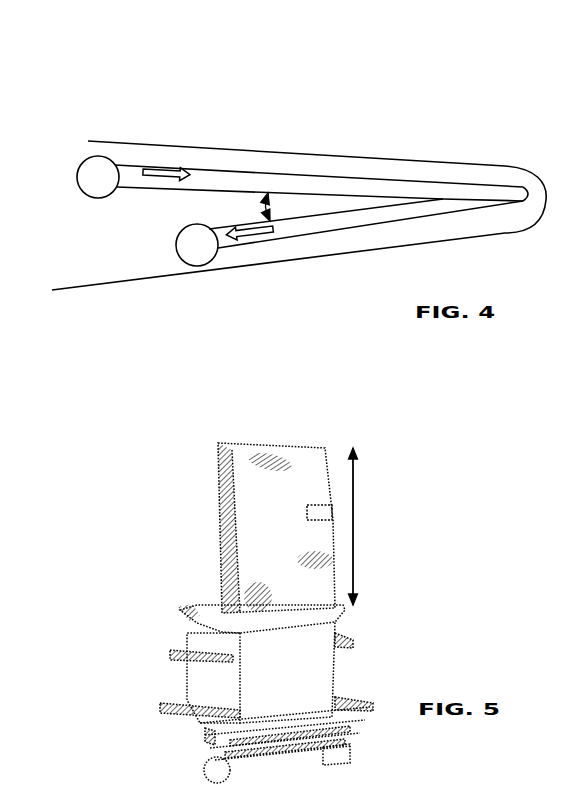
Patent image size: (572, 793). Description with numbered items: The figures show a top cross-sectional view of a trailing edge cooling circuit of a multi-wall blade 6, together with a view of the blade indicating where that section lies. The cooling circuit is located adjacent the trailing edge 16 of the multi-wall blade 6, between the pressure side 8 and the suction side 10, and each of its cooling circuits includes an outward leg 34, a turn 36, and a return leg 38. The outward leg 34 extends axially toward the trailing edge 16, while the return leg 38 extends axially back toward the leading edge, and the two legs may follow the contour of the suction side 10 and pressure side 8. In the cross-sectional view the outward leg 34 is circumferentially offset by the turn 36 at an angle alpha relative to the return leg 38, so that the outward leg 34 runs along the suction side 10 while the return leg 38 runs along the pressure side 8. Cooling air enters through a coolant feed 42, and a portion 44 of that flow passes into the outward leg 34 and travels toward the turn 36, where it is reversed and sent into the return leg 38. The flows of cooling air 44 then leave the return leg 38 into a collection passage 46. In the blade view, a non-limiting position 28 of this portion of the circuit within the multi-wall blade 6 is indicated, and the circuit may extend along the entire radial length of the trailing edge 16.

In FIG. 4, the multi-wall blade 6 is at (108, 355).
In FIG. 5, the multi-wall blade 6 is at (180, 535).
In FIG. 4, the pressure side 8 is at (275, 292).
In FIG. 4, the suction side 10 is at (358, 128).
In FIG. 4, the trailing edge 16 is at (483, 102).
In FIG. 5, the trailing edge 16 is at (383, 473).
In FIG. 5, the position 28 is at (312, 523).
In FIG. 4, the outward leg 34 is at (300, 176).
In FIG. 4, the turn 36 is at (530, 178).
In FIG. 4, the return leg 38 is at (360, 230).
In FIG. 4, the coolant feed 42 is at (84, 193).
In FIG. 4, the portion of the flow of cooling air 44 is at (160, 183).
In FIG. 4, the collection passage 46 is at (177, 253).